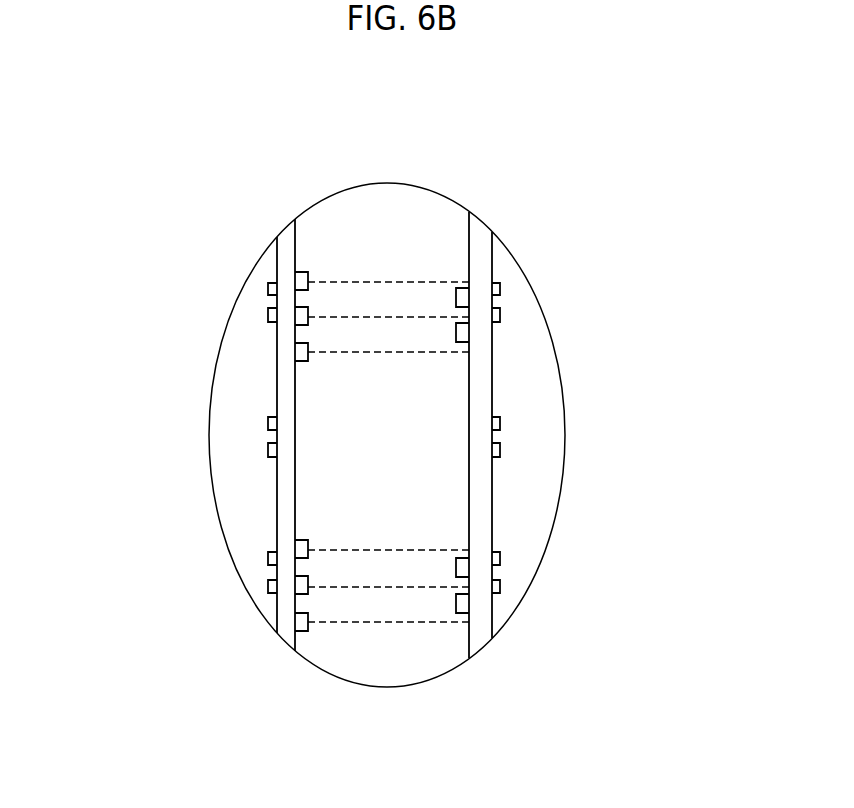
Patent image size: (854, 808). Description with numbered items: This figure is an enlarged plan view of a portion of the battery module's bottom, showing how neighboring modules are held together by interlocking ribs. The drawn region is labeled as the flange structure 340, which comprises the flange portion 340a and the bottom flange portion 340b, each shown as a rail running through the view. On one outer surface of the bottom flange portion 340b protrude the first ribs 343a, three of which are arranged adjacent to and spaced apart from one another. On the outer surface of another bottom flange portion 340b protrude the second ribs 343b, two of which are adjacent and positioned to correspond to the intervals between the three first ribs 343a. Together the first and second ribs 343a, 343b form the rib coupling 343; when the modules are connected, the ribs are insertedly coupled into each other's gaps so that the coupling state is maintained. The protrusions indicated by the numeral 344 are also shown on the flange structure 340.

The guide member 340 is at (388, 435).
The outer guide rail 340a is at (617, 460).
The inner guide rail 340b is at (470, 400).
The coupling protrusions 343 is at (382, 530).
The first coupling protrusion 343a is at (308, 587).
The second coupling protrusion 343b is at (453, 605).
The engaging protrusion 344 is at (500, 293).